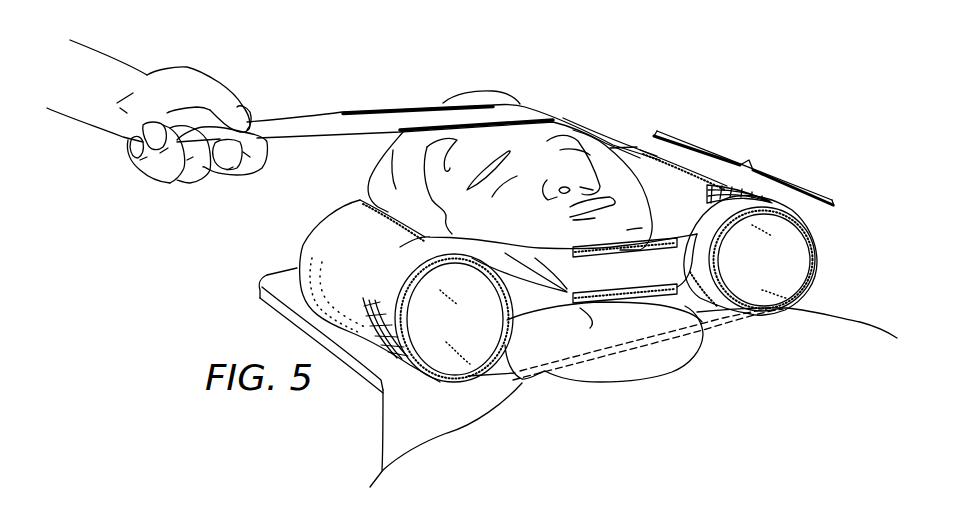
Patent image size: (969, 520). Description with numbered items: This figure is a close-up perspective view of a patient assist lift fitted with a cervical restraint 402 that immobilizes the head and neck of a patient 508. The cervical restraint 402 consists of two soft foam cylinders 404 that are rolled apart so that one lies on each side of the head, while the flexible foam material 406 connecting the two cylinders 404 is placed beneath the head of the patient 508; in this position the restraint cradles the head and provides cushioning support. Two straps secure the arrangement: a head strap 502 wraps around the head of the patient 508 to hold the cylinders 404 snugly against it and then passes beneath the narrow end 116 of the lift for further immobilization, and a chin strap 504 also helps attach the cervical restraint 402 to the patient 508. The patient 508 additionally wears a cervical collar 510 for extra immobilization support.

The narrow end 116 is at (273, 263).
The cervical restraint 402 is at (744, 168).
The soft foam cylinders 404 is at (478, 334).
The flexible foam material 406 is at (550, 368).
The head strap 502 is at (312, 124).
The chin strap 504 is at (393, 268).
The patient 508 is at (377, 183).
The cervical collar 510 is at (623, 360).